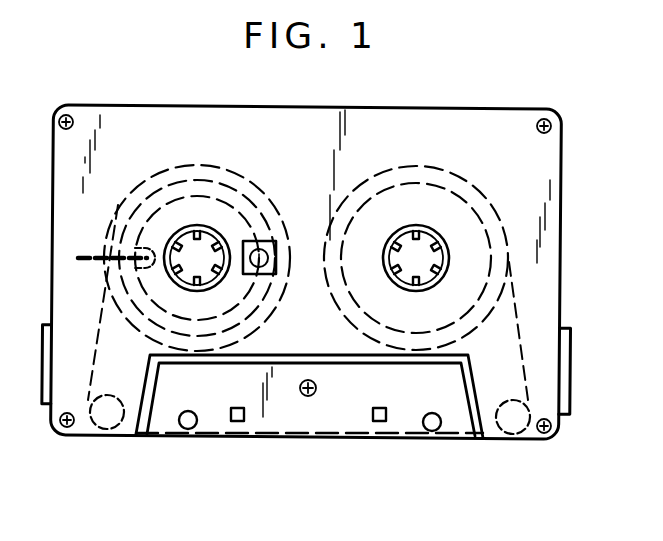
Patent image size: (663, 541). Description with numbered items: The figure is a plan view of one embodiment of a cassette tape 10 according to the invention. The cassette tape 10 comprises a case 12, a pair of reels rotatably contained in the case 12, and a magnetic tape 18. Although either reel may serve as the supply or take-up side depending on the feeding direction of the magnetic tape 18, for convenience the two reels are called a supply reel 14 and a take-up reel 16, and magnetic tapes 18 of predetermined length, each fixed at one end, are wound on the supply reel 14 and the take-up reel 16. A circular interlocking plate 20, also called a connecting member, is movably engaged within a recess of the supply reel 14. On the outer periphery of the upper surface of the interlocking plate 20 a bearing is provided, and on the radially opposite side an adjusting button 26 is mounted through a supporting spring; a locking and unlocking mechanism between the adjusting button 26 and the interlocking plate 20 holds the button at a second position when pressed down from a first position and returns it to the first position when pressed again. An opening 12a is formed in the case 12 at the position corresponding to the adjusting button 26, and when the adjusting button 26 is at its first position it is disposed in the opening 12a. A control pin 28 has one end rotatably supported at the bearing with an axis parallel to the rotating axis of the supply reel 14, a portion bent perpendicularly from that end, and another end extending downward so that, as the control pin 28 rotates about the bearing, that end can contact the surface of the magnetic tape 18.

The cassette tape 10 is at (134, 104).
The case 12 is at (298, 114).
The opening 12a is at (274, 242).
The supply reel 14 is at (249, 192).
The take-up reel 16 is at (470, 205).
The magnetic tape 18 is at (98, 326).
The interlocking plate 20 is at (154, 206).
The adjusting button 26 is at (276, 263).
The control pin 28 is at (89, 255).